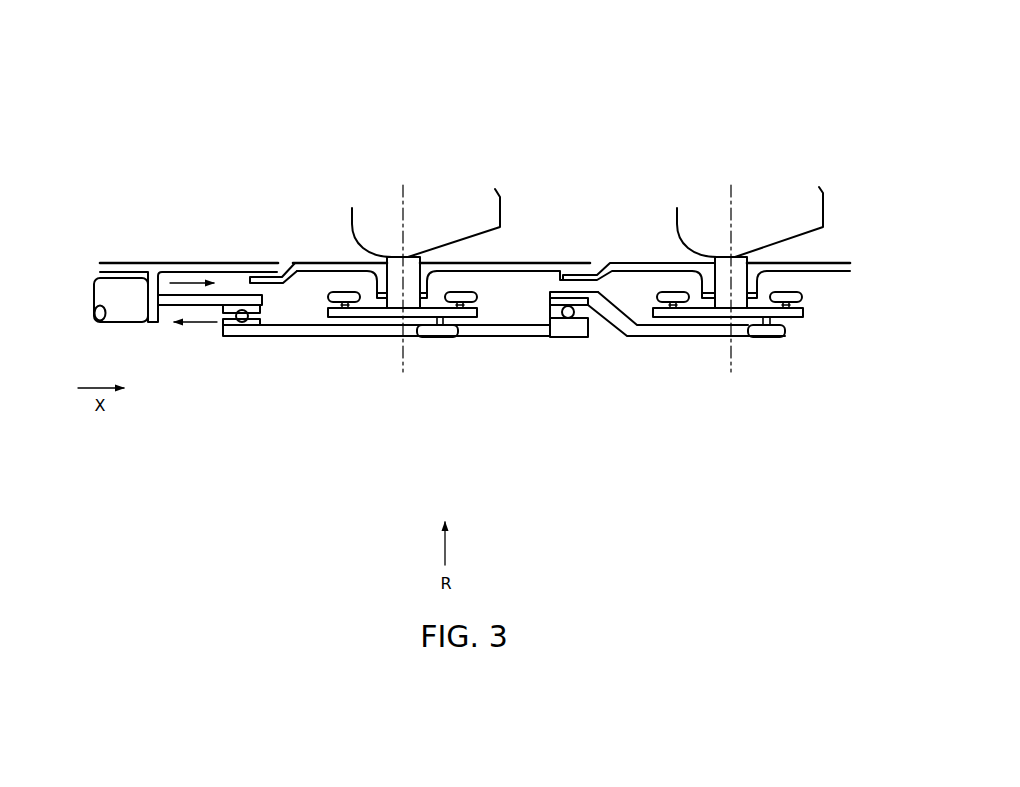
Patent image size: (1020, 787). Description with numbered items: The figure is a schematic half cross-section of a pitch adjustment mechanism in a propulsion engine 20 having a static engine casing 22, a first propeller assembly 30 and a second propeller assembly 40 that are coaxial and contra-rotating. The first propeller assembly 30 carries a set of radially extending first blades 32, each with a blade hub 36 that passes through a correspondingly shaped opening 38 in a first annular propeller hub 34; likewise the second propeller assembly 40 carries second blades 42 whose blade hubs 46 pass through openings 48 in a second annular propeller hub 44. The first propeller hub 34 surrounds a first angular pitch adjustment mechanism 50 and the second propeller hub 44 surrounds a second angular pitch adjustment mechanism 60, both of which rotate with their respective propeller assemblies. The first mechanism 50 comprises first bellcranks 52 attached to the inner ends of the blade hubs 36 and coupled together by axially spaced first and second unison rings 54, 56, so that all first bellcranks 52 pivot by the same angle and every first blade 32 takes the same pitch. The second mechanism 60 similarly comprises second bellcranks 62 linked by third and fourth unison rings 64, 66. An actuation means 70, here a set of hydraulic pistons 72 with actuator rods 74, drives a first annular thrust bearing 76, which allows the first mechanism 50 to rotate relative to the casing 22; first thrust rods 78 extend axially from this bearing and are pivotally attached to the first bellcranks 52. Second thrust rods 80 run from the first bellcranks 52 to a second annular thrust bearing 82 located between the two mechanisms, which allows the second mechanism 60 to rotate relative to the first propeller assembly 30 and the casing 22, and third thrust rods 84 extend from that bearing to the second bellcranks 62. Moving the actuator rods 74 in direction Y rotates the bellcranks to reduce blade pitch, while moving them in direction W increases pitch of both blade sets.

The propulsion engine 20 is at (521, 28).
The static engine casing 22 is at (158, 263).
The first propeller assembly 30 is at (430, 126).
The first blade 32 is at (500, 196).
The first annular propeller hub 34 is at (557, 262).
The first blade hub 36 is at (387, 258).
The opening in first propeller hub 38 is at (422, 258).
The second propeller assembly 40 is at (762, 154).
The second blade 42 is at (822, 189).
The second annular propeller hub 44 is at (832, 262).
The second blade hub 46 is at (717, 259).
The opening in second propeller hub 48 is at (748, 259).
The first angular pitch adjustment mechanism 50 is at (379, 405).
The first bellcrank 52 is at (368, 314).
The first unison ring 54 is at (343, 301).
The second unison ring 56 is at (465, 301).
The second angular pitch adjustment mechanism 60 is at (709, 387).
The second bellcrank 62 is at (737, 313).
The third unison ring 64 is at (670, 303).
The fourth unison ring 66 is at (802, 296).
The actuation means 70 is at (114, 220).
The hydraulic piston 72 is at (116, 308).
The actuator rod 74 is at (183, 302).
The first annular thrust bearing 76 is at (229, 337).
The first thrust rod 78 is at (258, 337).
The second thrust rod 80 is at (522, 332).
The second annular thrust bearing 82 is at (570, 319).
The third thrust rod 84 is at (682, 331).